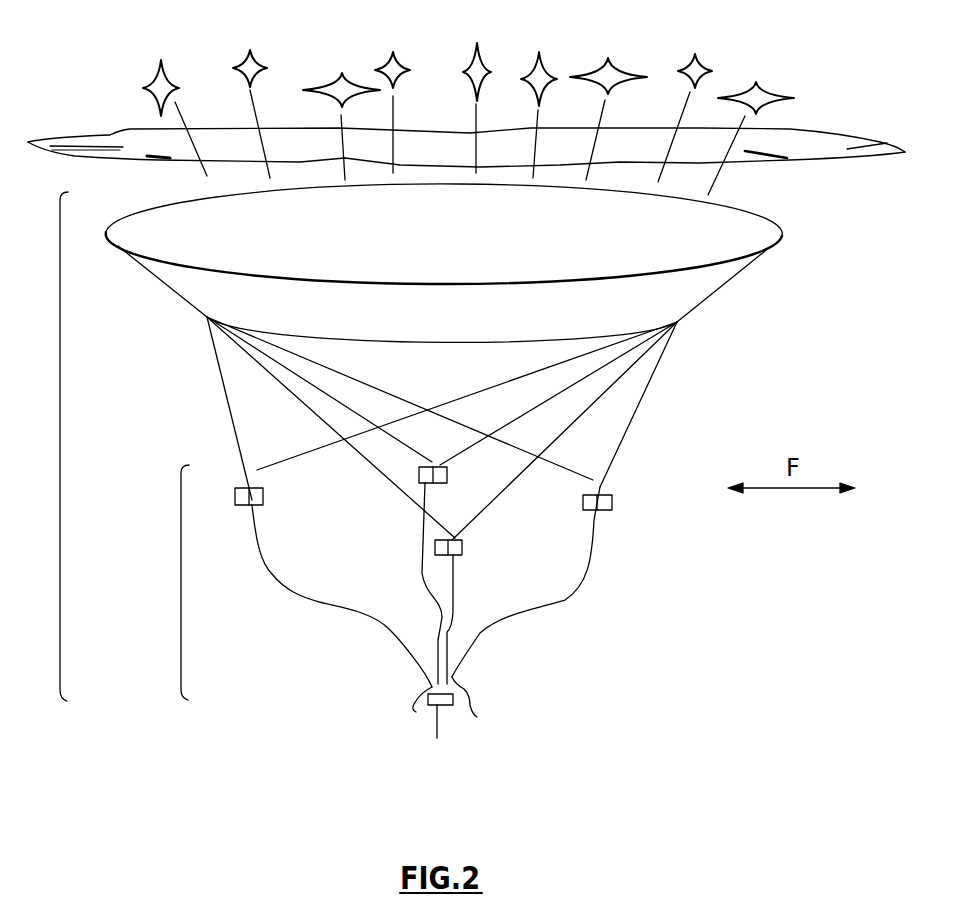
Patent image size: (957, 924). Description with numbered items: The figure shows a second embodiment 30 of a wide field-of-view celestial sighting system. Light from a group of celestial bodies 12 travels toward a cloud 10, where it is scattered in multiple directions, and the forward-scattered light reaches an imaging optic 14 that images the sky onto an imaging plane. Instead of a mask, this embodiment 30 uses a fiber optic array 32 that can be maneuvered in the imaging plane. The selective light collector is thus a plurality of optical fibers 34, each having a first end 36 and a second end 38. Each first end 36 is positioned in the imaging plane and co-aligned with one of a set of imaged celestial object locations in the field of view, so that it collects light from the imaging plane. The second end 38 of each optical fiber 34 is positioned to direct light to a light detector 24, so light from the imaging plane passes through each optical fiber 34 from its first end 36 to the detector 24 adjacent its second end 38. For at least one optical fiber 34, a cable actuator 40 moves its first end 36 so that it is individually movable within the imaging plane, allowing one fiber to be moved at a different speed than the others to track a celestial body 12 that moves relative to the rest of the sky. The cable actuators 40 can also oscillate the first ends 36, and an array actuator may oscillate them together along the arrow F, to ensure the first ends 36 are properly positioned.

The cloud 10 is at (80, 136).
The celestial body 12 is at (340, 81).
The imaging optic 14 is at (148, 263).
The light detector 24 is at (437, 736).
The second embodiment of a wide field-of-view celestial sighting system 30 is at (60, 447).
The fiber optic array 32 is at (181, 588).
The optical fiber 34 is at (270, 576).
The first end 36 is at (246, 482).
The second end 38 is at (412, 705).
The cable actuator 40 is at (243, 508).